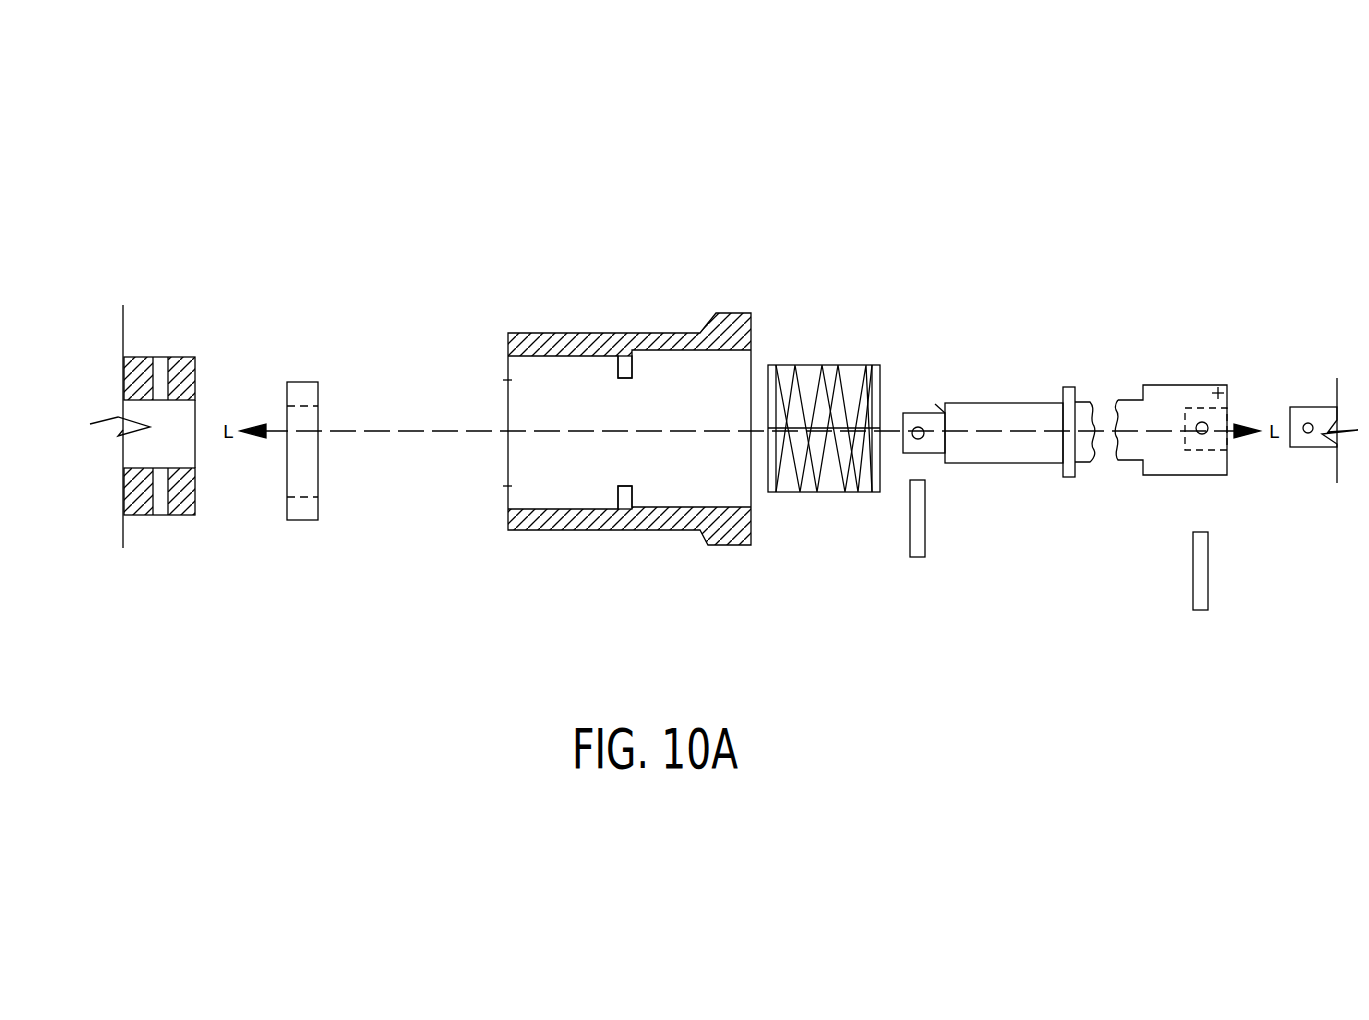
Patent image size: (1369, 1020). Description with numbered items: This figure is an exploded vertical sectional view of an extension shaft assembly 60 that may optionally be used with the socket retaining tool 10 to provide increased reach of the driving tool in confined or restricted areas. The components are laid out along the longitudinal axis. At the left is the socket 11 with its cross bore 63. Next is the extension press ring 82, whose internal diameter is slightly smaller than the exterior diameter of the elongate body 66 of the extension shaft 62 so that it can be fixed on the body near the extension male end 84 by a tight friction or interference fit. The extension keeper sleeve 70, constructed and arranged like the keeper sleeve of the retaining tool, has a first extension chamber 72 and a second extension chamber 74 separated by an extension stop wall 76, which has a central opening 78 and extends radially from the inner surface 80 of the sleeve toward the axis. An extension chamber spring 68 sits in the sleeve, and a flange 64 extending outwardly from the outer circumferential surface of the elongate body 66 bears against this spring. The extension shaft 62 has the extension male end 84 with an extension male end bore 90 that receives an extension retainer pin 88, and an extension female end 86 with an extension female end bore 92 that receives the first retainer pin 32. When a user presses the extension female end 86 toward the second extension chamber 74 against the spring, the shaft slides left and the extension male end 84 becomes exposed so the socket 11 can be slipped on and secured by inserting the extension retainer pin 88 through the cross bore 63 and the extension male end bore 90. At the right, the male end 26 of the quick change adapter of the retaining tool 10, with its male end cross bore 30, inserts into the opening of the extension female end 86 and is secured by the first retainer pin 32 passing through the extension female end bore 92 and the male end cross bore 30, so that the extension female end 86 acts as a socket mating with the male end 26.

The socket retaining tool 10 is at (1323, 320).
The extension shaft assembly 60 is at (858, 240).
The socket 11 is at (188, 515).
The cross bore 63 is at (161, 367).
The extension press ring 82 is at (304, 520).
The extension keeper sleeve 70 is at (640, 332).
The extension stop wall 76 is at (618, 368).
The first extension chamber 72 is at (579, 429).
The second extension chamber 74 is at (683, 425).
The inner surface 80 is at (656, 352).
The central opening 78 is at (618, 450).
The extension chamber spring 68 is at (800, 490).
The extension male end 84 is at (903, 413).
The extension male end bore 90 is at (918, 427).
The extension retainer pin 88 is at (914, 557).
The elongate body 66 is at (980, 403).
The flange 64 is at (1056, 392).
The extension shaft 62 is at (1160, 385).
The extension female end 86 is at (1222, 385).
The extension female end bore 92 is at (1198, 434).
The first retainer pin 32 is at (1193, 610).
The male end 26 is at (1295, 407).
The male end cross bore 30 is at (1308, 434).